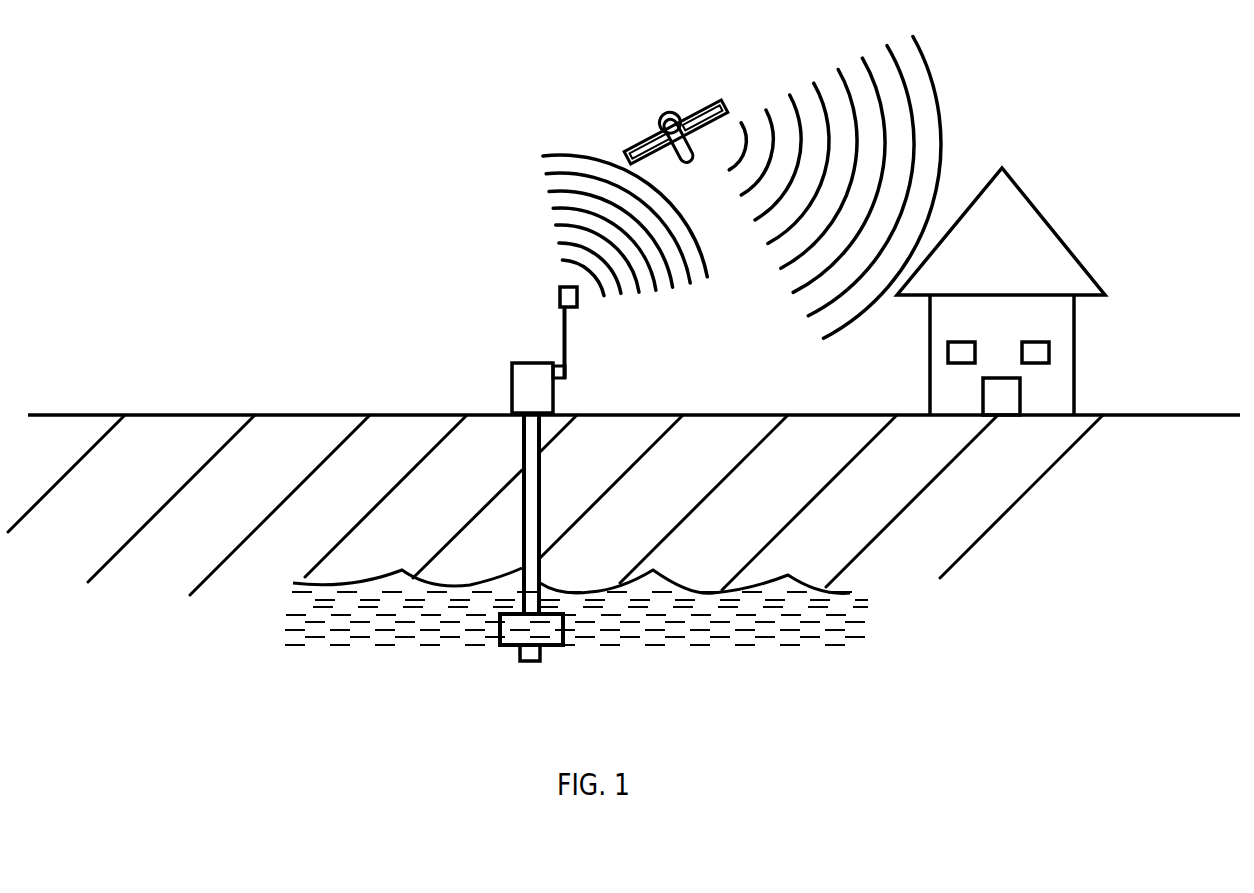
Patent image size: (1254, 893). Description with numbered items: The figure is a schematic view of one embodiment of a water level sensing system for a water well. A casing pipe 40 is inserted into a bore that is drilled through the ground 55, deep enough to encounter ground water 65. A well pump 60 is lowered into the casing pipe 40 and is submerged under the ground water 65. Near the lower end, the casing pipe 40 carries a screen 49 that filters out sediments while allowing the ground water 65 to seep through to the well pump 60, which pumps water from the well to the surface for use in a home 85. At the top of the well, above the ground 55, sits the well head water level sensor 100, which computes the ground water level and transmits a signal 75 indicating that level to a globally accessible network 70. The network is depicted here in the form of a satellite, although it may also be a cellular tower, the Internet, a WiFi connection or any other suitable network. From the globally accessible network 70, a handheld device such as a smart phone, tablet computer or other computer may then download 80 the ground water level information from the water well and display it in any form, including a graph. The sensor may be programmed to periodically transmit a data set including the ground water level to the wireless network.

The casing pipe 40 is at (532, 478).
The screen 49 is at (527, 656).
The ground 55 is at (402, 436).
The well pump 60 is at (545, 631).
The ground water 65 is at (643, 638).
The globally accessible network 70 is at (657, 90).
The signal 75 is at (538, 137).
The download 80 is at (962, 87).
The home 85 is at (1055, 190).
The well head water level sensor 100 is at (588, 374).